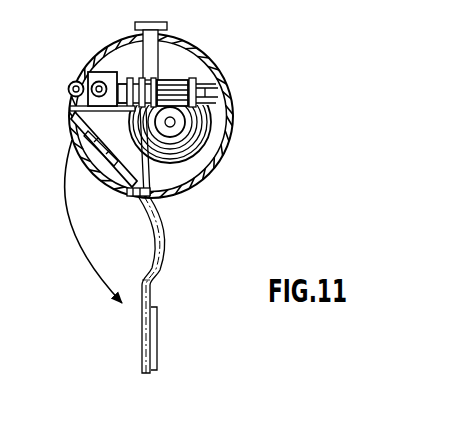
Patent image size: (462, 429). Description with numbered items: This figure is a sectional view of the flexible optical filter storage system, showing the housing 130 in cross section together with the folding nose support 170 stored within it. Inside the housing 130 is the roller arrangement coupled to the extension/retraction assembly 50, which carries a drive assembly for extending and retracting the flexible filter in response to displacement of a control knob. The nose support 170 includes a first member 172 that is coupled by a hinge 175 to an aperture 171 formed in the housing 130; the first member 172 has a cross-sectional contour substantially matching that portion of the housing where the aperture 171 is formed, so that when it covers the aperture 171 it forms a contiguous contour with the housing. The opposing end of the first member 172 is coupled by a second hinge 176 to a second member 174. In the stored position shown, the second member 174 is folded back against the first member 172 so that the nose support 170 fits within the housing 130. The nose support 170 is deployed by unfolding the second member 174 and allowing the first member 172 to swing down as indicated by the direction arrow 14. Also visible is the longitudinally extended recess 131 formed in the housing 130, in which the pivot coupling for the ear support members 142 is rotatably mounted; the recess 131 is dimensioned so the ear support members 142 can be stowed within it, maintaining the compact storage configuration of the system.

The direction arrow 14 is at (66, 246).
The extension/retraction assembly 50 is at (177, 75).
The housing 130 is at (217, 168).
The recess 131 is at (76, 74).
The ear support members 142 is at (68, 90).
The nose support 170 is at (167, 337).
The aperture 171 is at (72, 138).
The first member 172 is at (162, 253).
The second member 174 is at (140, 327).
The hinge 175 is at (128, 197).
The hinge 176 is at (153, 285).